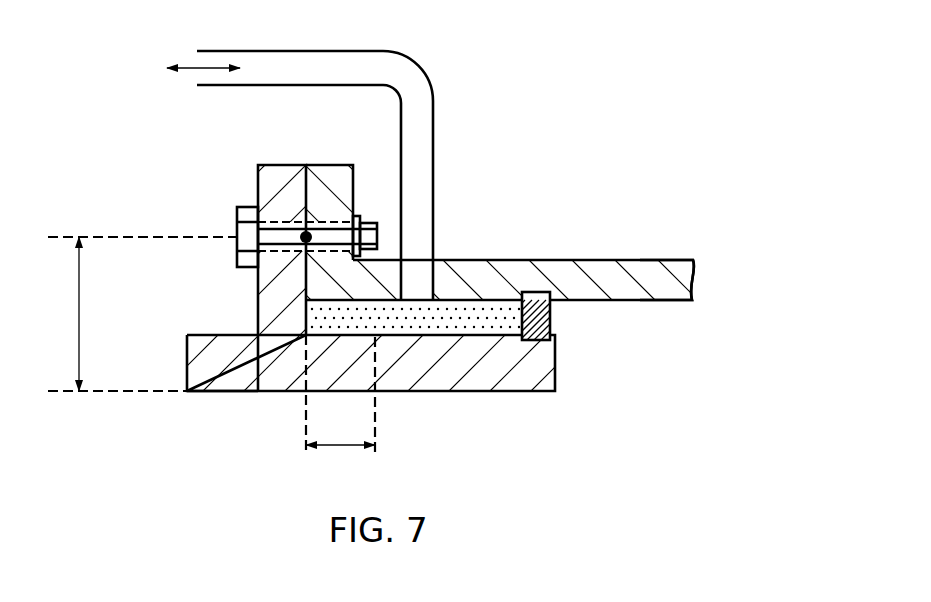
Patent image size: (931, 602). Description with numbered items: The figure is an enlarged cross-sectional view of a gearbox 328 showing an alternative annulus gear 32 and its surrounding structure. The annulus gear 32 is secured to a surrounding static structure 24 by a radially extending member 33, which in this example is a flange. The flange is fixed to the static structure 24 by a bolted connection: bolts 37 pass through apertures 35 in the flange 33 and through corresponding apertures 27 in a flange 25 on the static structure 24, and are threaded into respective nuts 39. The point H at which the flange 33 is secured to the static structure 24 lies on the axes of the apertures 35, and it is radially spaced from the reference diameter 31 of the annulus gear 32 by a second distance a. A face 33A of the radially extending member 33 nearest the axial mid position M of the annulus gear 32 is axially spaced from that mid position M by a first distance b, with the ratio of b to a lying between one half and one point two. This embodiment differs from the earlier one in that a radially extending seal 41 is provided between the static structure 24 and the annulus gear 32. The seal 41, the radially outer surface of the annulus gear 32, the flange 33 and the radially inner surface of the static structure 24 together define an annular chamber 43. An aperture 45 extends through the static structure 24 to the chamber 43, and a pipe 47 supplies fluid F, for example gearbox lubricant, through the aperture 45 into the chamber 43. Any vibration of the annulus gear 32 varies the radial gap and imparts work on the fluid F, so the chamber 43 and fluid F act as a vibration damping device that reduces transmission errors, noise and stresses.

The surrounding static structure 24 is at (652, 277).
The flange 25 is at (342, 183).
The apertures 27 is at (350, 207).
The reference diameter 31 is at (215, 393).
The annulus gear 32 is at (543, 358).
The radially extending member 33 is at (275, 272).
The face 33A is at (302, 358).
The apertures 35 is at (280, 225).
The bolts 37 is at (245, 232).
The nuts 39 is at (377, 238).
The seal 41 is at (548, 317).
The annular chamber 43 is at (480, 320).
The aperture 45 is at (422, 278).
The pipe 47 is at (420, 62).
The gearbox 328 is at (657, 180).
The point H is at (307, 230).
The fluid F is at (190, 70).
The axial mid position M is at (377, 358).
The second distance a is at (142, 314).
The first distance b is at (340, 395).